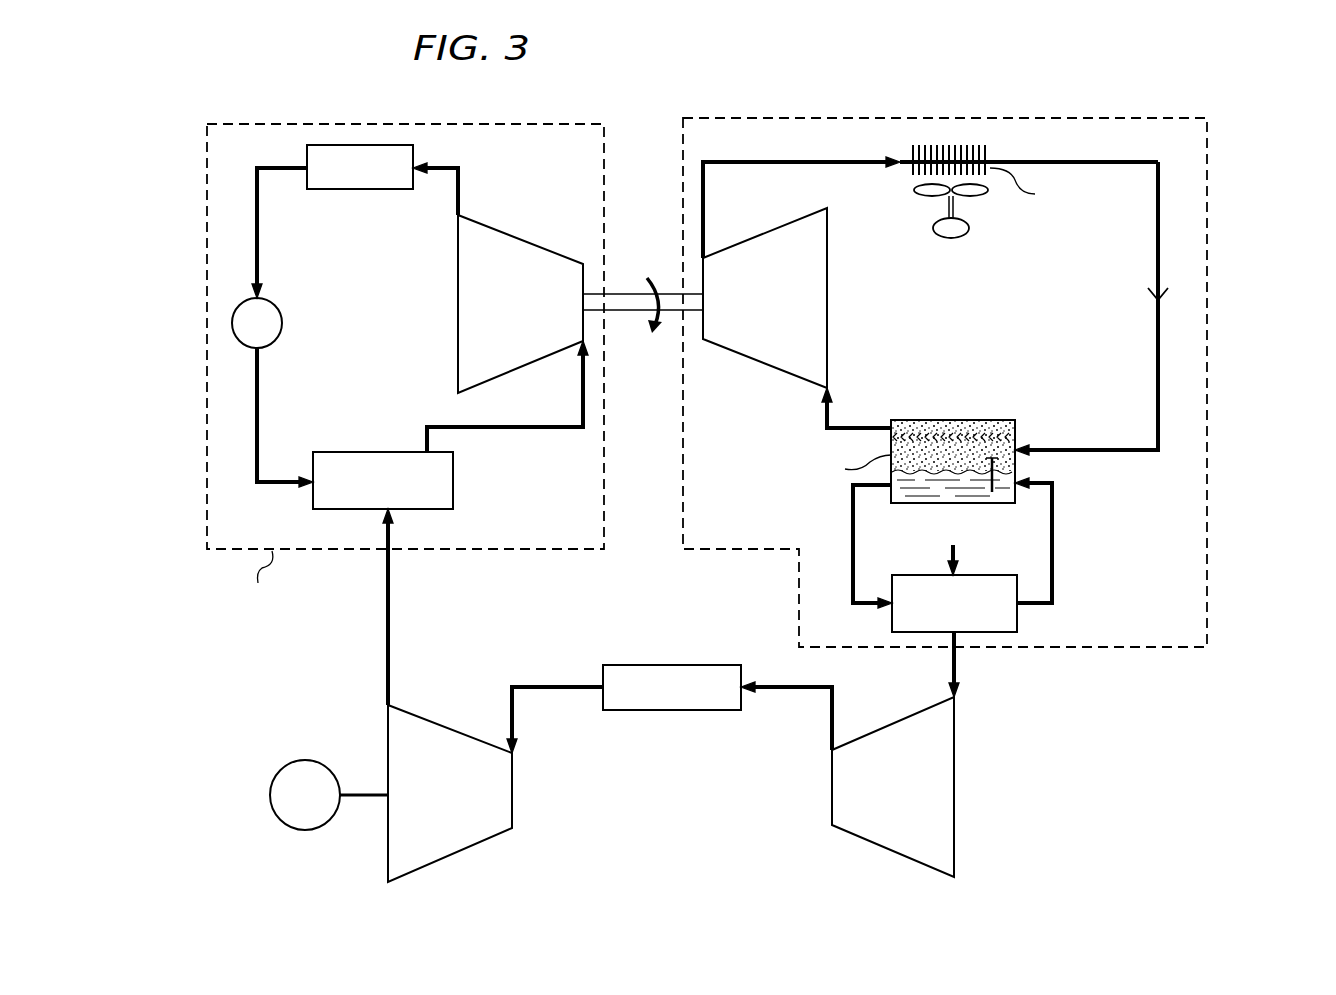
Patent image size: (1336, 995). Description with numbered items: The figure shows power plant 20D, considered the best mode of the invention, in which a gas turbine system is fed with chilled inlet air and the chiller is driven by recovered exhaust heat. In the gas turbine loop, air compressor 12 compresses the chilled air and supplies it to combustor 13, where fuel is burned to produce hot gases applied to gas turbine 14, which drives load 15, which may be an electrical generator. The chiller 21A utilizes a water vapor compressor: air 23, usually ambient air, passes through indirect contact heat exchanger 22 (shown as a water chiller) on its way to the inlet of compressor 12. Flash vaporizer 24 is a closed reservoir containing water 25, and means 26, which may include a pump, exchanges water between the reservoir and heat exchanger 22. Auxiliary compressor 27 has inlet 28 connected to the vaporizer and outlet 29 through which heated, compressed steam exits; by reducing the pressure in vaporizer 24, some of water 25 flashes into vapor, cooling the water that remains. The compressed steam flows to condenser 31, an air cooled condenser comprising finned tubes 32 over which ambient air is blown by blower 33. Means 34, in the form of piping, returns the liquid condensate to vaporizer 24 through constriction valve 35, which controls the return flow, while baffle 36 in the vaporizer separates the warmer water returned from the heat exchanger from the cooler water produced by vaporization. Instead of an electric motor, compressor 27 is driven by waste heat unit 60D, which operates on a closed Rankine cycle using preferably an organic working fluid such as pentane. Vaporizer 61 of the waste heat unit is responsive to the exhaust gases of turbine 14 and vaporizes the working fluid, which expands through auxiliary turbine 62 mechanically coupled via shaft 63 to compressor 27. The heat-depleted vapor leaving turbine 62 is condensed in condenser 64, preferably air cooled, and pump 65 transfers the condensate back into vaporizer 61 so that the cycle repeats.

The power plant 20D is at (672, 102).
The waste heat unit 60D is at (207, 442).
The vaporizer 61 is at (362, 452).
The auxiliary turbine 62 is at (458, 322).
The shaft 63 is at (627, 295).
The condenser 64 is at (352, 190).
The pump 65 is at (275, 305).
The chiller 21A is at (1207, 357).
The indirect contact heat exchanger 22 is at (1017, 618).
The air 23 is at (958, 552).
The flash vaporizer 24 is at (1003, 440).
The water 25 is at (905, 493).
The means for exchanging water 26 is at (1052, 515).
The auxiliary compressor 27 is at (827, 352).
The inlet 28 is at (827, 422).
The outlet 29 is at (703, 200).
The condenser 31 is at (1008, 140).
The finned tubes 32 is at (945, 146).
The blower 33 is at (955, 206).
The means connecting condenser to vaporizer 34 is at (1158, 202).
The constriction valve 35 is at (1165, 293).
The baffle 36 is at (1018, 460).
The air compressor 12 is at (954, 836).
The combustor 13 is at (660, 710).
The gas turbine 14 is at (475, 845).
The load 15 is at (275, 780).